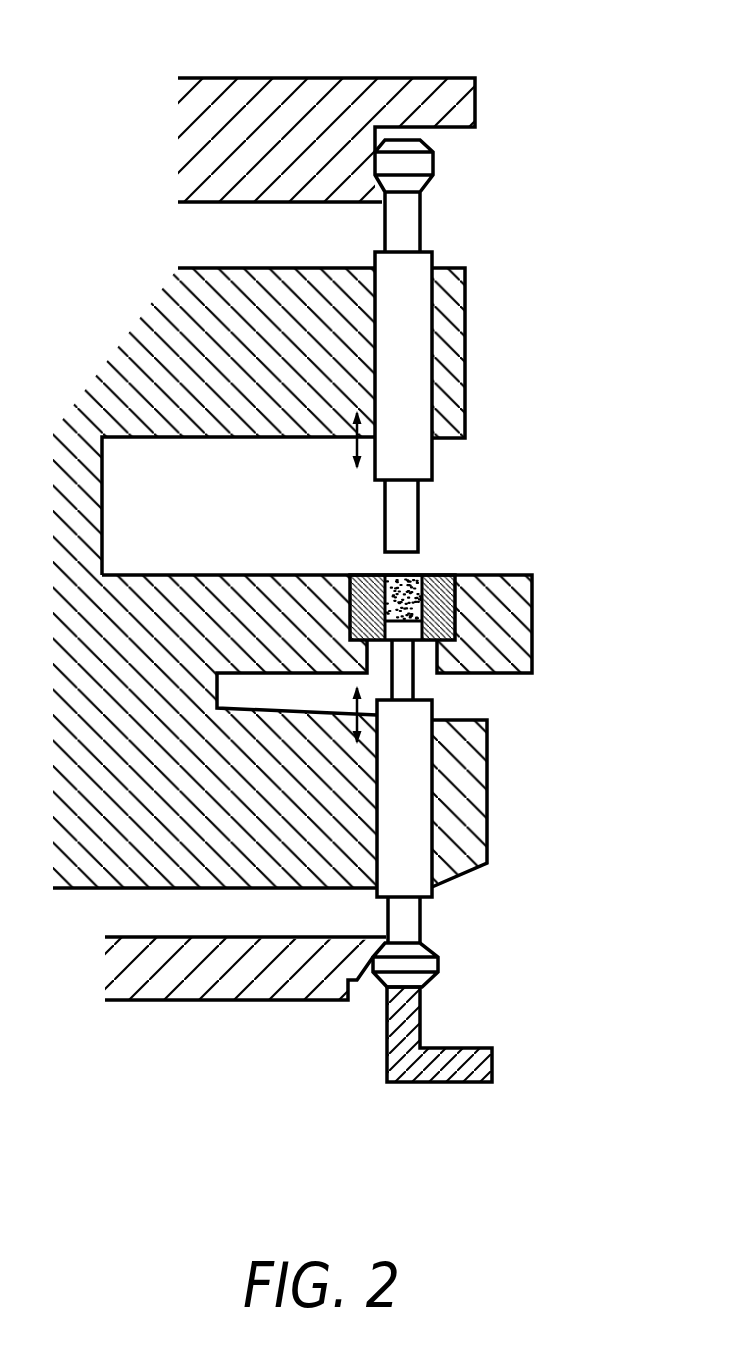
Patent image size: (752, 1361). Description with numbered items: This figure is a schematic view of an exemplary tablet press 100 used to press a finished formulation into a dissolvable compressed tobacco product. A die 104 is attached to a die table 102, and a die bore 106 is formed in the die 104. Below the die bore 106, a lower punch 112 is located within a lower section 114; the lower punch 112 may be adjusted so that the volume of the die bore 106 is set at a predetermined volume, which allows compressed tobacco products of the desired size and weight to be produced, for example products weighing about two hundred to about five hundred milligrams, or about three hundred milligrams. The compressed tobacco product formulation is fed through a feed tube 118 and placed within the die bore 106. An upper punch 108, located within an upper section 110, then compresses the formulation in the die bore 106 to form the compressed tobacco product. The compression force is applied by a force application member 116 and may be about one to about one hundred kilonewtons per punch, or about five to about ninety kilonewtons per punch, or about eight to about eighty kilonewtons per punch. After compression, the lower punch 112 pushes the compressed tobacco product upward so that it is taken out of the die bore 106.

The tablet press 100 is at (282, 57).
The die table 102 is at (248, 624).
The die 104 is at (363, 576).
The die bore 106 is at (402, 575).
The upper punch 108 is at (412, 348).
The upper section 110 is at (270, 350).
The lower punch 112 is at (408, 793).
The lower section 114 is at (207, 820).
The force application member 116 is at (427, 116).
The feed tube 118 is at (402, 1033).